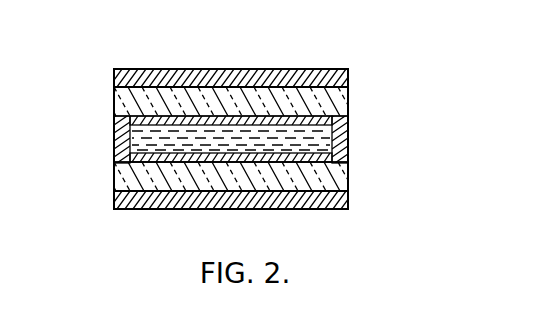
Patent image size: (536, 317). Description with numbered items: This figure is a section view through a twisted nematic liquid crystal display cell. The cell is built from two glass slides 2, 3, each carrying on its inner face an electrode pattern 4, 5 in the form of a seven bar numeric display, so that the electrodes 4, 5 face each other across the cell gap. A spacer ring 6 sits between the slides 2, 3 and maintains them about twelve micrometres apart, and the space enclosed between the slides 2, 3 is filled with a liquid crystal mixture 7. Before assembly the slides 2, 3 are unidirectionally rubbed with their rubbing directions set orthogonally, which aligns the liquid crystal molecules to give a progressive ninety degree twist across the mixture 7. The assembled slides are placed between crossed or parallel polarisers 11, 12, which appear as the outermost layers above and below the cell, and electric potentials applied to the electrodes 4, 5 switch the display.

The polariser 11 is at (138, 72).
The glass slide 2 is at (118, 98).
The electrode pattern 4 is at (333, 121).
The spacer ring 6 is at (114, 139).
The liquid crystal mixture 7 is at (326, 150).
The electrode pattern 5 is at (317, 162).
The glass slide 3 is at (118, 173).
The polariser 12 is at (115, 202).